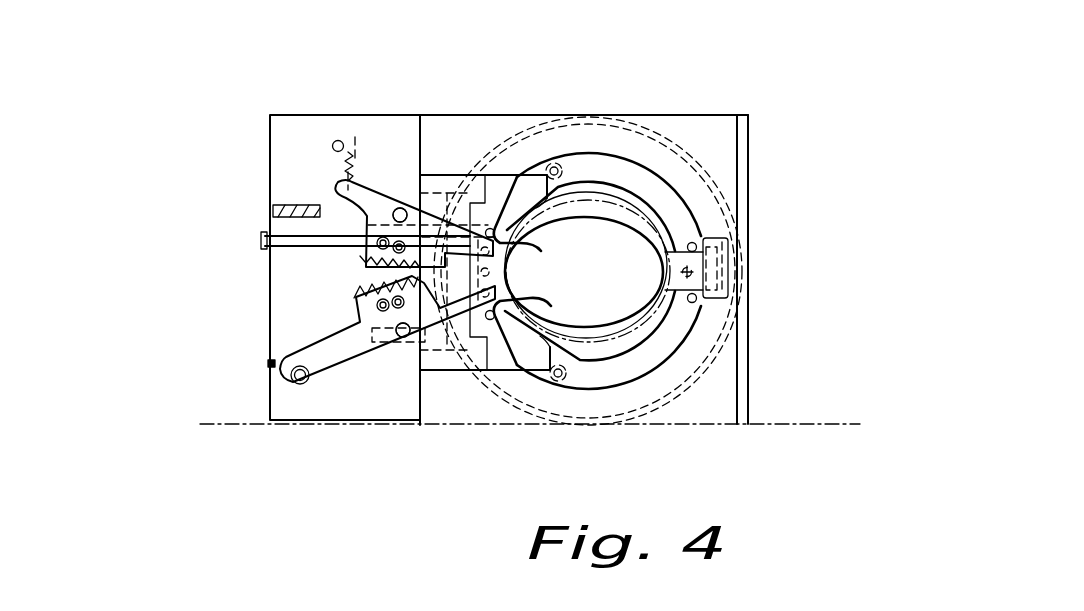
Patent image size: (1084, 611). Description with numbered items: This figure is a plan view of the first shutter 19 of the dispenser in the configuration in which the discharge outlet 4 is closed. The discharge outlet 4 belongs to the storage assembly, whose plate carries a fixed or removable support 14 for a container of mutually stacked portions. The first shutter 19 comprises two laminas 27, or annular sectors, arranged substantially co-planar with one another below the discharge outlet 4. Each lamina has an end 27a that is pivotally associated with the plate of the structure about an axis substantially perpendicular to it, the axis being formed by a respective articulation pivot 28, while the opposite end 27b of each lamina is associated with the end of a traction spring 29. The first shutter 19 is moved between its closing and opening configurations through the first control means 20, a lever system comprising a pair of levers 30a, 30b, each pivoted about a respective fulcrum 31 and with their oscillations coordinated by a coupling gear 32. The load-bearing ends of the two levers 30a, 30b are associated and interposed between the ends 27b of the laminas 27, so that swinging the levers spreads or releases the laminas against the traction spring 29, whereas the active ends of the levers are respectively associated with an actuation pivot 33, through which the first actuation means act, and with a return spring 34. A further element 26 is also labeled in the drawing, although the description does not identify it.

The discharge outlet 4 is at (573, 297).
The support 14 is at (665, 370).
The first shutter 19 is at (726, 268).
The first control means 20 is at (270, 363).
The push rod 26 is at (261, 241).
The laminas 27 is at (610, 181).
The end of lamina 27a is at (677, 228).
The opposite end of lamina 27b is at (494, 230).
The articulation pivot 28 is at (702, 236).
The traction spring 29 is at (485, 275).
The lever 30a is at (338, 372).
The lever 30b is at (337, 185).
The fulcrum 31 is at (400, 208).
The coupling gear 32 is at (345, 270).
The actuation pivot 33 is at (298, 383).
The return spring 34 is at (335, 144).